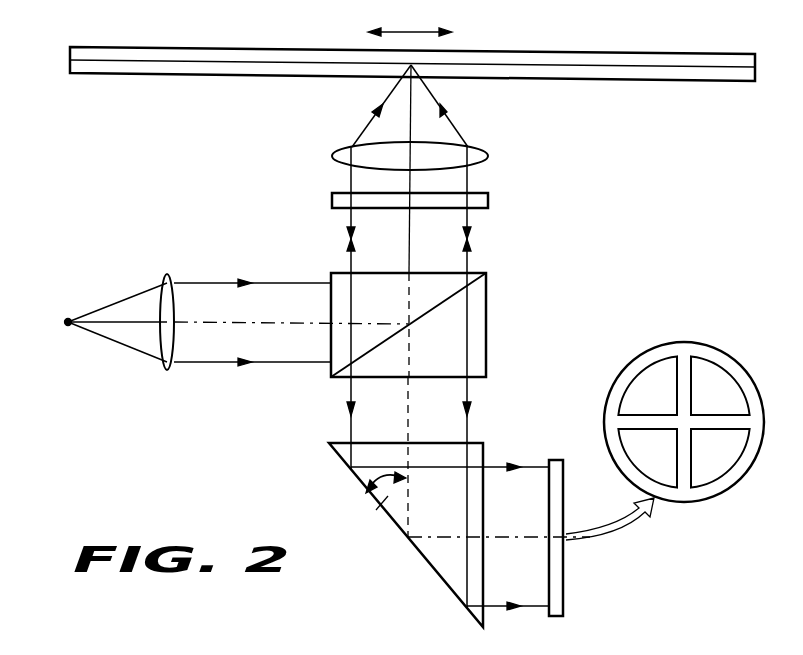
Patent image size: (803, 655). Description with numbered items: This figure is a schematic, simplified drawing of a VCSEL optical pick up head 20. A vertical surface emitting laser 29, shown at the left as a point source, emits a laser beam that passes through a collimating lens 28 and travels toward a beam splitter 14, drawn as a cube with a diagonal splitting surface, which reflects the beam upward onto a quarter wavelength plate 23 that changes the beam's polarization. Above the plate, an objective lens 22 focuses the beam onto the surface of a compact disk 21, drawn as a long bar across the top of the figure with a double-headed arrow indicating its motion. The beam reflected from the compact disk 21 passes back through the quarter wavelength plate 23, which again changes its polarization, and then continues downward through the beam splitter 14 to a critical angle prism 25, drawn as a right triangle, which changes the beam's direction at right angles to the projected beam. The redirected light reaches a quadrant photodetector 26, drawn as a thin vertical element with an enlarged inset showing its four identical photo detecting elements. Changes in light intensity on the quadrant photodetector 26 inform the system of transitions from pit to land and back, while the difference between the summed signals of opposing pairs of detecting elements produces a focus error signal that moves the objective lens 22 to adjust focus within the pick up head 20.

The beam splitter 14 is at (486, 328).
The VCSEL optical pick up head 20 is at (197, 509).
The compact disk 21 is at (70, 49).
The objective lens 22 is at (332, 156).
The quarter wavelength plate 23 is at (332, 200).
The critical angle prism 25 is at (439, 443).
The quadrant photodetector 26 is at (556, 460).
The collimating lens 28 is at (167, 371).
The vertical surface emitting laser 29 is at (68, 326).